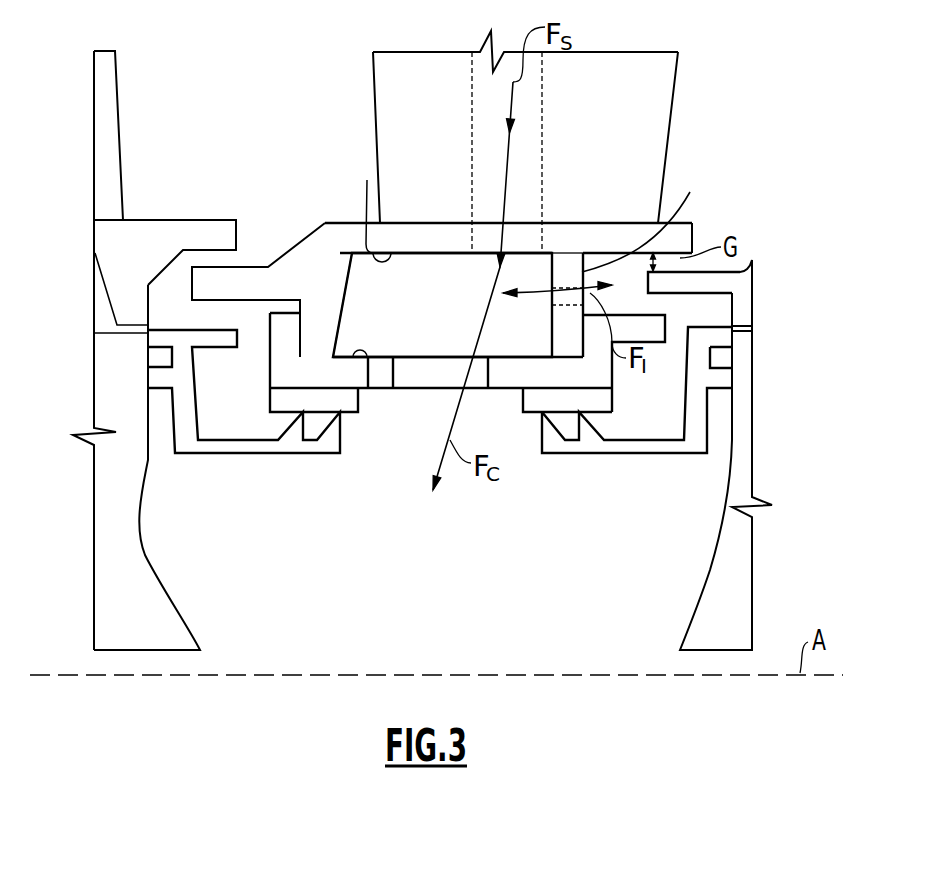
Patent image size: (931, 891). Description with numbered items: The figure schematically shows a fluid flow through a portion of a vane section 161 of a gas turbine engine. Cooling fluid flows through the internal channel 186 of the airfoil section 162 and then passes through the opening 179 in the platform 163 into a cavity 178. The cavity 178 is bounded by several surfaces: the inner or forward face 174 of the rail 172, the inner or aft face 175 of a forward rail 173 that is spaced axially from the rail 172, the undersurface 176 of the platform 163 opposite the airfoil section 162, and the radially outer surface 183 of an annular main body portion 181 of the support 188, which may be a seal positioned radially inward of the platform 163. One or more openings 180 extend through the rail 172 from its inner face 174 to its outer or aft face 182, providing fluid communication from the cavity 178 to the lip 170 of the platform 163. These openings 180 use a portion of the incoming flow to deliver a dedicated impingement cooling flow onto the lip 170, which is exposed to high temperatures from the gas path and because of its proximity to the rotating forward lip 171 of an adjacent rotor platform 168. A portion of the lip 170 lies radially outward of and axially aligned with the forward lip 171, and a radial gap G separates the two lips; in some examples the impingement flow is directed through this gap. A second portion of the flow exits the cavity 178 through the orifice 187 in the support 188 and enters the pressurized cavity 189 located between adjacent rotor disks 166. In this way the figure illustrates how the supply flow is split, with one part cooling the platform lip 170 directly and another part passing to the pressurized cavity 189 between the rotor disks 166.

The vane section 161 is at (298, 72).
The airfoil section 162 is at (400, 118).
The platform 163 is at (357, 237).
The rotor disks 166 is at (125, 575).
The rotor platform 168 is at (740, 283).
The lip 170 is at (683, 240).
The forward lip 171 is at (683, 288).
The rail 172 is at (568, 333).
The forward rail 173 is at (327, 300).
The inner face 174 is at (550, 335).
The aft face 175 is at (343, 312).
The undersurface 176 is at (354, 211).
The cavity 178 is at (440, 319).
The opening 179 is at (520, 233).
The openings 180 is at (567, 303).
The annular main body portion 181 is at (381, 368).
The aft face 182 is at (660, 222).
The radially outer surface 183 is at (367, 412).
The internal channel 186 is at (533, 107).
The orifice 187 is at (416, 378).
The support 188 is at (293, 370).
The pressurized cavity 189 is at (455, 591).